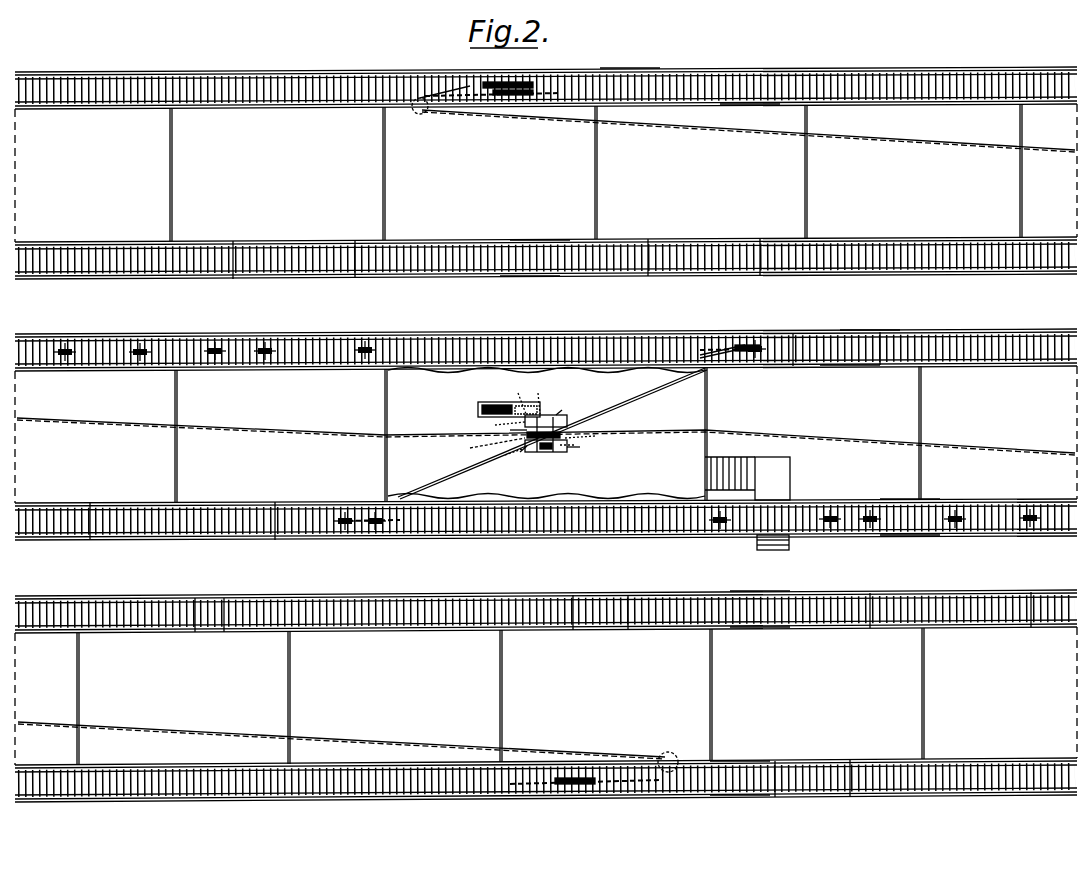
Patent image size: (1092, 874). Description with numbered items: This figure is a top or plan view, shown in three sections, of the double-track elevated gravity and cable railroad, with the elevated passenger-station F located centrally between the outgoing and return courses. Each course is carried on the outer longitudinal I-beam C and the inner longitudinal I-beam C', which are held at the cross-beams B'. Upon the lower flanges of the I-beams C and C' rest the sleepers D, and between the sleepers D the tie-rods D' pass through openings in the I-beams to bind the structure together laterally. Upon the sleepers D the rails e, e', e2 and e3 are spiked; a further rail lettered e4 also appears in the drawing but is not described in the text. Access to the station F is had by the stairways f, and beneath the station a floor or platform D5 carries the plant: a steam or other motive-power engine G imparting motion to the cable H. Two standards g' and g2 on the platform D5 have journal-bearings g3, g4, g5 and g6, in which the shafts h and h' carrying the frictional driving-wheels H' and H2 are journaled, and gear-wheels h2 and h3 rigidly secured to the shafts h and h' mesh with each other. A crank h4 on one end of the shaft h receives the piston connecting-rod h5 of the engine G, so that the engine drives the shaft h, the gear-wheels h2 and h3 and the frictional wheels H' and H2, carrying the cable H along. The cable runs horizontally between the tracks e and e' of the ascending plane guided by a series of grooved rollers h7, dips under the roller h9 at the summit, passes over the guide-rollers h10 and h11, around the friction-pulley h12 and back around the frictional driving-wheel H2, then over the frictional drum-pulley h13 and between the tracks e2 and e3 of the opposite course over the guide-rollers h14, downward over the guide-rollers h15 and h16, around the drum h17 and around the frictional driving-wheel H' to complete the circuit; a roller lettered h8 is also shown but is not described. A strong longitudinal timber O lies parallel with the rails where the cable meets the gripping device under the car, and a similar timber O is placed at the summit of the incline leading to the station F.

The outer longitudinal I-beam C is at (546, 438).
The inner longitudinal I-beam C' is at (546, 434).
The cross-beam B' is at (549, 434).
The sleeper D is at (620, 505).
The tie-rod D' is at (478, 503).
The floor or platform D5 is at (600, 440).
The cable H is at (546, 434).
The frictional driving-wheel H' is at (507, 461).
The frictional driving-wheel H2 is at (552, 415).
The longitudinal timber O is at (525, 108).
The rail e is at (750, 320).
The rail e' is at (800, 375).
The rail e2 is at (537, 240).
The rail e3 is at (525, 276).
The rail e4 is at (907, 499).
The elevated passenger-station F is at (572, 492).
The stairway f is at (747, 503).
The motive-power engine G is at (488, 402).
The standard g' is at (559, 417).
The standard g2 is at (546, 452).
The journal-bearing g3 is at (515, 428).
The journal-bearing g4 is at (570, 448).
The journal-bearing g5 is at (568, 403).
The journal-bearing g6 is at (525, 453).
The shaft h is at (505, 428).
The shaft h' is at (574, 450).
The gear-wheel h2 is at (497, 446).
The gear-wheel h3 is at (587, 442).
The crank h4 is at (539, 394).
The piston connecting-rod h5 is at (520, 395).
The grooved roller h7 is at (67, 362).
The rope sheave h8 is at (418, 113).
The roller h9 is at (267, 362).
The guide-roller h10 is at (364, 360).
The guide-roller h11 is at (718, 345).
The friction-pulley h12 is at (757, 345).
The frictional drum-pulley h13 is at (676, 752).
The guide-roller h14 is at (872, 529).
The guide-roller h15 is at (830, 529).
The guide-roller h16 is at (376, 530).
The drum h17 is at (345, 530).